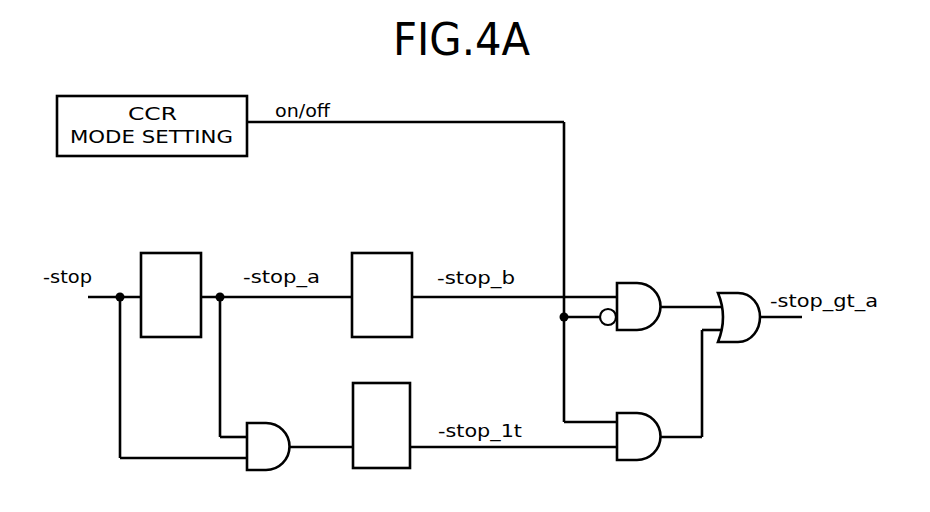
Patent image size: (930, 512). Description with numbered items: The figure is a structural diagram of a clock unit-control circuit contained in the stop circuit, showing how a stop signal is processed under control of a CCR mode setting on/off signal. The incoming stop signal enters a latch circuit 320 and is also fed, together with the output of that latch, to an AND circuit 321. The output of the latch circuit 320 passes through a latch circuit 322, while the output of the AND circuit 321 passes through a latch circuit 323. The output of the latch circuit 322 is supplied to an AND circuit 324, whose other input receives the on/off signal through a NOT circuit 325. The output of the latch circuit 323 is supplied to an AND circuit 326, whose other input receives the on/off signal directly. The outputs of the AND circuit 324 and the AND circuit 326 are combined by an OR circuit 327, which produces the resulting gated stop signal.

The latch circuit 320 is at (170, 260).
The AND circuit 321 is at (265, 427).
The latch circuit 322 is at (382, 260).
The latch circuit 323 is at (380, 390).
The AND circuit 324 is at (635, 285).
The NOT circuit 325 is at (605, 325).
The AND circuit 326 is at (637, 413).
The OR circuit 327 is at (732, 338).